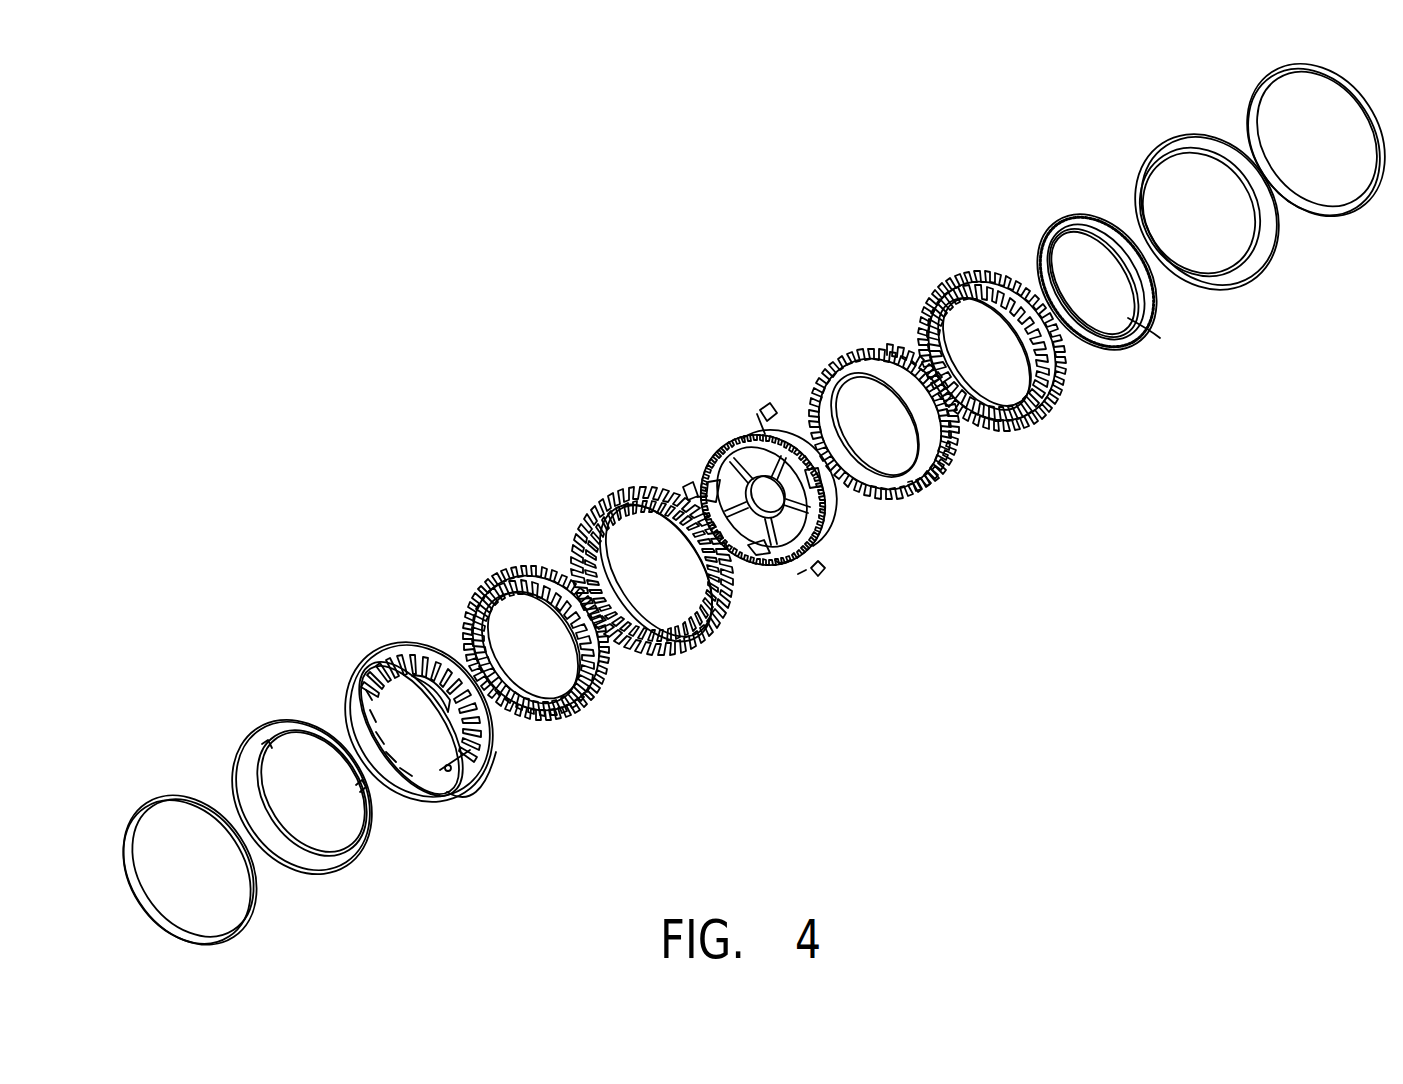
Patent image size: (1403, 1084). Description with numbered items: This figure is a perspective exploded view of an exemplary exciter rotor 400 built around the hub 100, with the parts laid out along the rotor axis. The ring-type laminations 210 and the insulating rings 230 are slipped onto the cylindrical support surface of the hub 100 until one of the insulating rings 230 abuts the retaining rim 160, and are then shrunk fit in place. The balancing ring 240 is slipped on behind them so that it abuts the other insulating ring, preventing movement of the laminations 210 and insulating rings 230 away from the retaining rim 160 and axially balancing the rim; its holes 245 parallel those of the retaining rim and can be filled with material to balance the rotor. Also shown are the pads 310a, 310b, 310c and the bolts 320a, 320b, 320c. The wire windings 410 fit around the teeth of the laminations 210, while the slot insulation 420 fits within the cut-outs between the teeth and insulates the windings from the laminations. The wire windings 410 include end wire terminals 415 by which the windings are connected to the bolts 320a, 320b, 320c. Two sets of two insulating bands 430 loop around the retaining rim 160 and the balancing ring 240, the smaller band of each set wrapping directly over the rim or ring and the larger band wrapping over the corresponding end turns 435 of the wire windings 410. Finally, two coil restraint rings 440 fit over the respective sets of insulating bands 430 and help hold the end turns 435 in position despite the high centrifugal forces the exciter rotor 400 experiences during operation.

The hub 100 is at (707, 451).
The retaining rim 160 is at (782, 562).
The laminations 210 is at (938, 467).
The insulating rings 230 is at (542, 568).
The balancing ring 240 is at (1093, 216).
The holes 245 is at (1130, 318).
The pad 310a is at (825, 568).
The pad 310b is at (688, 484).
The pad 310c is at (768, 405).
The bolt 320a is at (802, 578).
The bolt 320b is at (686, 497).
The bolt 320c is at (758, 413).
The exciter rotor 400 is at (454, 300).
The wire windings 410 is at (418, 713).
The end wire terminals 415 is at (412, 678).
The slot insulation 420 is at (733, 632).
The insulating bands 430 is at (392, 845).
The end turns 435 is at (496, 752).
The coil restraint rings 440 is at (160, 795).